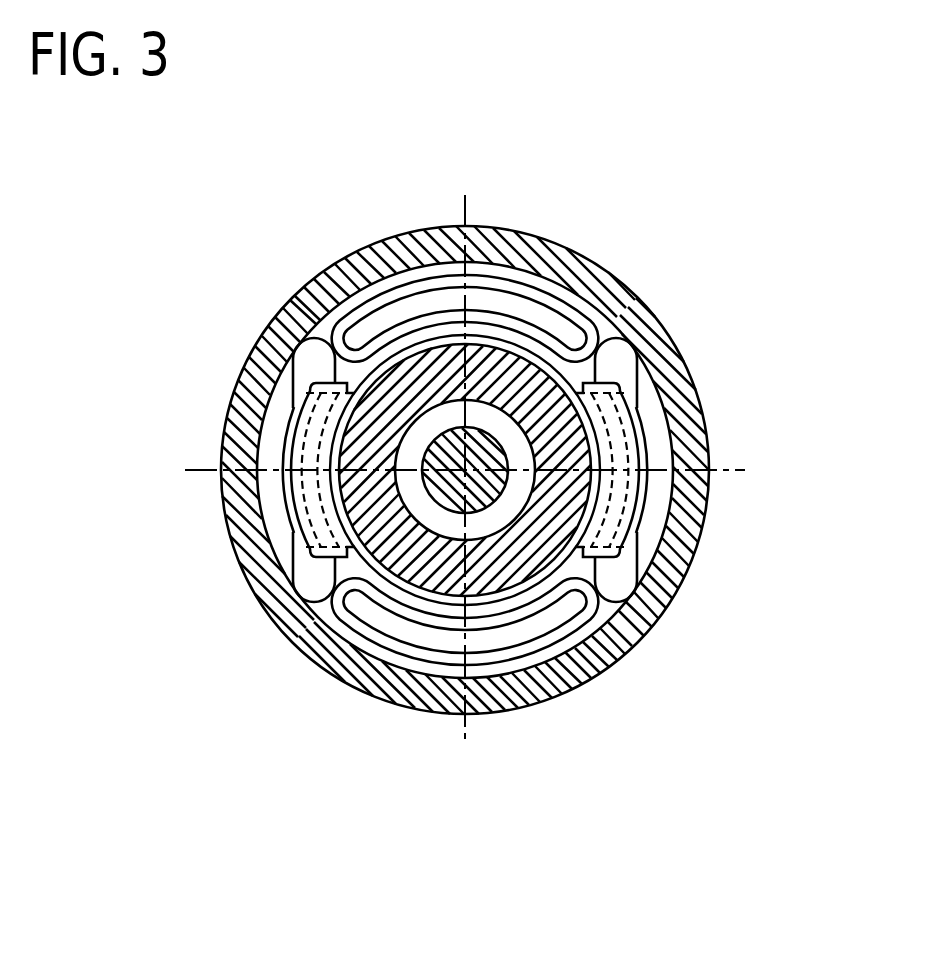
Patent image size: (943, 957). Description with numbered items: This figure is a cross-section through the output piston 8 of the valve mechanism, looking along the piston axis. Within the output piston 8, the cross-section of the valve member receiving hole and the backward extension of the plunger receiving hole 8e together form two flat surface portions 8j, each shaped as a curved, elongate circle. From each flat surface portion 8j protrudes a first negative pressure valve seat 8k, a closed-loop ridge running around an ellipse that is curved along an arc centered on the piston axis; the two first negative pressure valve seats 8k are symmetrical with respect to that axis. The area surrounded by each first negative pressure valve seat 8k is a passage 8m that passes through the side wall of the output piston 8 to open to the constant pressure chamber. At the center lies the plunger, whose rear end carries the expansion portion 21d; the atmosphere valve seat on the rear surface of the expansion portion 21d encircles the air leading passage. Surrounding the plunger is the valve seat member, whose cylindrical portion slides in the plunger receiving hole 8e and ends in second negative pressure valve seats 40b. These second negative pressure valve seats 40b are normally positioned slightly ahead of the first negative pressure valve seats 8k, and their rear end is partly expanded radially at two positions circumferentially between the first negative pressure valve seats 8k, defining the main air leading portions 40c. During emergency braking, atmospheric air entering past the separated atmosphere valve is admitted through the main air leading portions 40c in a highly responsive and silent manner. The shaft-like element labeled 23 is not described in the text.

The output piston 8 is at (695, 548).
The plunger receiving hole 8e is at (330, 433).
The flat surface portion 8j is at (617, 335).
The first negative pressure valve seat 8k is at (542, 292).
The passage 8m is at (479, 292).
The expansion portion 21d is at (514, 566).
The shaft 23 is at (433, 442).
The second negative pressure valve seat 40b is at (347, 613).
The main air leading portion 40c is at (637, 452).